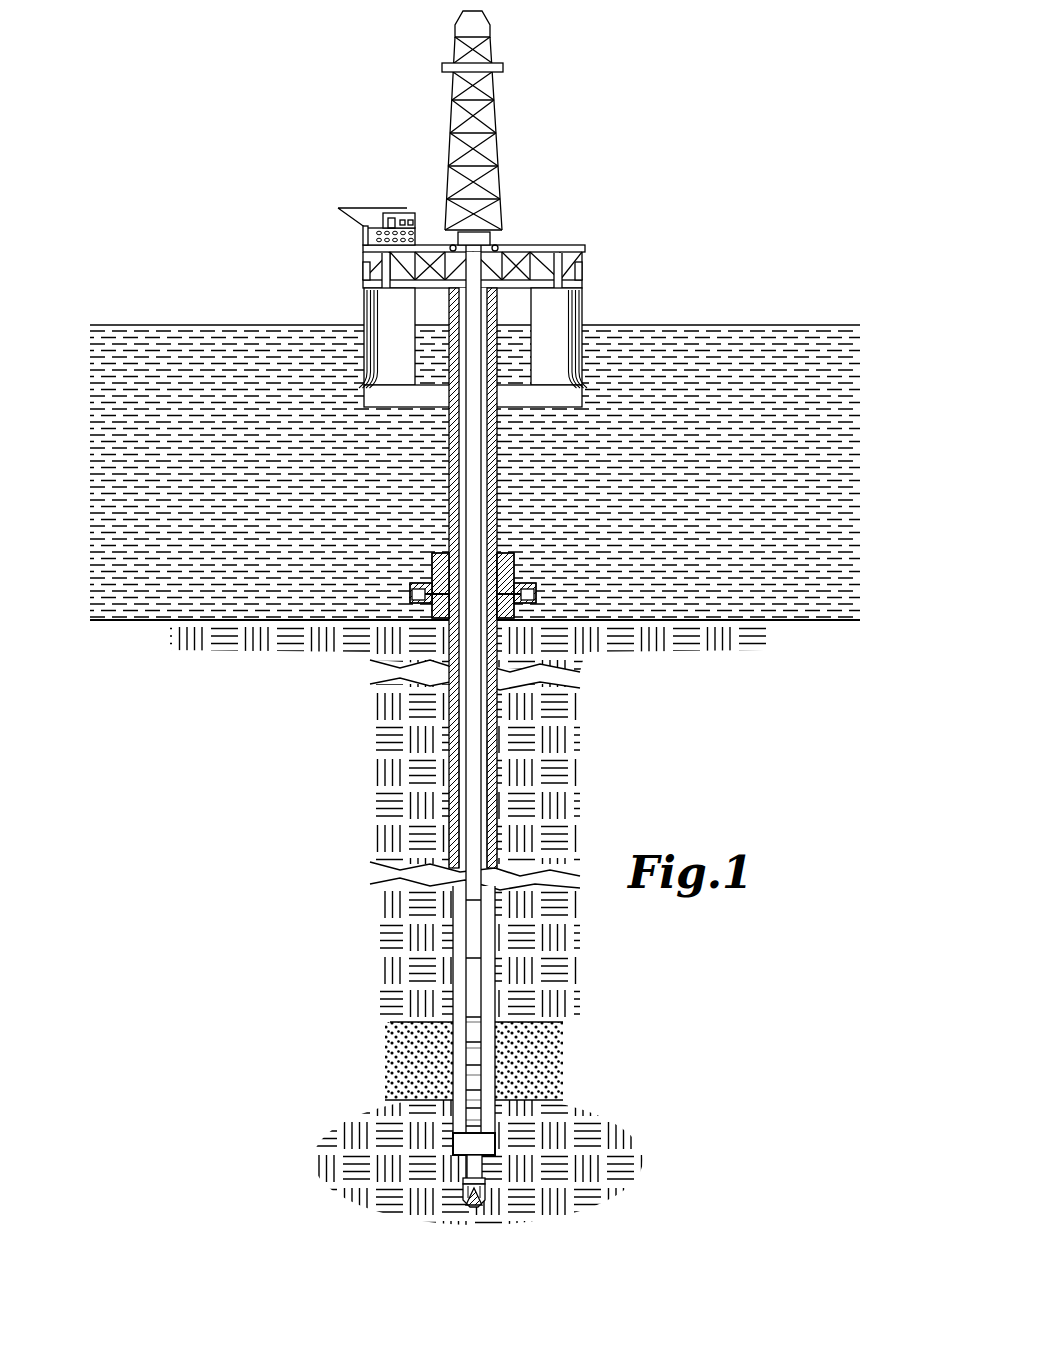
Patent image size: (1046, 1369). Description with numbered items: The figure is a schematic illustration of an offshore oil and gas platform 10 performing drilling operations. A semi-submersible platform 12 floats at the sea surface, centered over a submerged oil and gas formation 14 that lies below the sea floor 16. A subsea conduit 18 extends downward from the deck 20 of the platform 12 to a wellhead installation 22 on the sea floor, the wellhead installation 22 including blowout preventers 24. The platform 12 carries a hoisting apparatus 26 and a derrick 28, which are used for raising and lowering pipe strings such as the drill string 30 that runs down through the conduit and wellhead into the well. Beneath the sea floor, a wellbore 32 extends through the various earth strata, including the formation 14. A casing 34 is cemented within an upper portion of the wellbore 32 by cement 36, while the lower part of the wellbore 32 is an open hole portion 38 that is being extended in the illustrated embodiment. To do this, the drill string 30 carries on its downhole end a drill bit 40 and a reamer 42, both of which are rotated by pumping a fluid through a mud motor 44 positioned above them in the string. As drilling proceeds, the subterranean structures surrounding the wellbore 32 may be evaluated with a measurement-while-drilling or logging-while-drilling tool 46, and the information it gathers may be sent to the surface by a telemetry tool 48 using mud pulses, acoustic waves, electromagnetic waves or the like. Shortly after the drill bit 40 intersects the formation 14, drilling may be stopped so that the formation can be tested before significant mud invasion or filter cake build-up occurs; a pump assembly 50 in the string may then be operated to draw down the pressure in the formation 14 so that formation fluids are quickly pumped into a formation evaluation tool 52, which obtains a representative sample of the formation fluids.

The offshore oil and gas platform 10 is at (632, 188).
The semi-submersible platform 12 is at (582, 247).
The oil and gas formation 14 is at (555, 1068).
The sea floor 16 is at (708, 622).
The subsea conduit 18 is at (448, 458).
The deck 20 is at (582, 292).
The wellhead installation 22 is at (514, 570).
The blowout preventers 24 is at (536, 590).
The hoisting apparatus 26 is at (474, 222).
The derrick 28 is at (490, 47).
The drill string 30 is at (480, 495).
The wellbore 32 is at (455, 758).
The casing 34 is at (455, 790).
The cement 36 is at (455, 836).
The open hole portion 38 is at (455, 920).
The drill bit 40 is at (486, 1195).
The reamer 42 is at (490, 1145).
The mud motor 44 is at (468, 1130).
The measurement-while-drilling or logging-while-drilling tool 46 is at (468, 1105).
The telemetry tool 48 is at (468, 1081).
The pump assembly 50 is at (468, 1056).
The formation evaluation tool 52 is at (468, 1032).